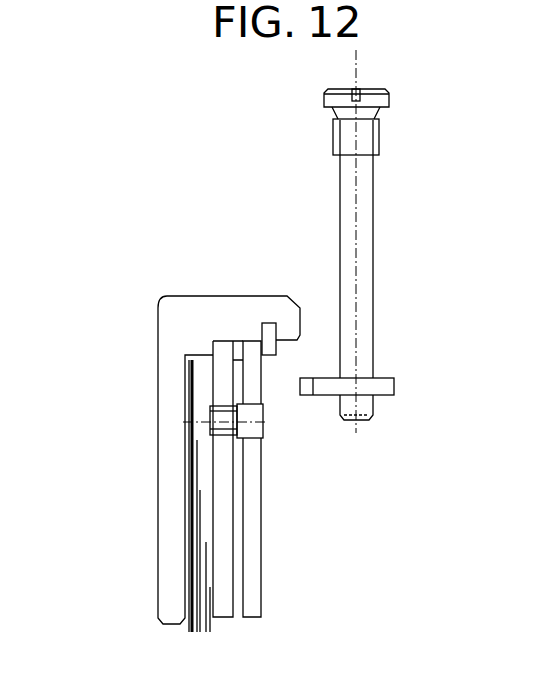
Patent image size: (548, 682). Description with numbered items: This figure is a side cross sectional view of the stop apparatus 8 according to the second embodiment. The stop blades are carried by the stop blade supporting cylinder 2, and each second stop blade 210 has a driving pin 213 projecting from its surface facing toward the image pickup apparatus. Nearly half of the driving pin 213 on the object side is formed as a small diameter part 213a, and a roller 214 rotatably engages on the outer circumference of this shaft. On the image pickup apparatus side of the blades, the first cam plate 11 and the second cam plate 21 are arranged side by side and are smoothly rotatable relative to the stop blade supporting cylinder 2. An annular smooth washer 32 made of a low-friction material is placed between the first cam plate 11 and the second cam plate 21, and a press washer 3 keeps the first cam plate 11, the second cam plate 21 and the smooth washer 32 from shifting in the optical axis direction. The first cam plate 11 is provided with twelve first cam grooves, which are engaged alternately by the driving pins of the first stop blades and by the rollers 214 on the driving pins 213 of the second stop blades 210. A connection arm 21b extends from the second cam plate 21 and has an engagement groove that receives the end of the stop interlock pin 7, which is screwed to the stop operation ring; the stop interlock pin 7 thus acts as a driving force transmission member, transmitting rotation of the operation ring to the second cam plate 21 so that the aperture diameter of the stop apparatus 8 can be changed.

The stop apparatus 8 is at (99, 296).
The stop blade supporting cylinder 2 is at (171, 307).
The second stop blade 210 is at (189, 400).
The first cam plate 11 is at (222, 570).
The smooth washer 32 is at (238, 346).
The second cam plate 21 is at (252, 537).
The press washer 3 is at (268, 323).
The small diameter part 213a is at (205, 417).
The driving pin 213 is at (266, 432).
The roller 214 is at (222, 436).
The connection arm 21b is at (387, 388).
The stop interlock pin 7 is at (367, 268).